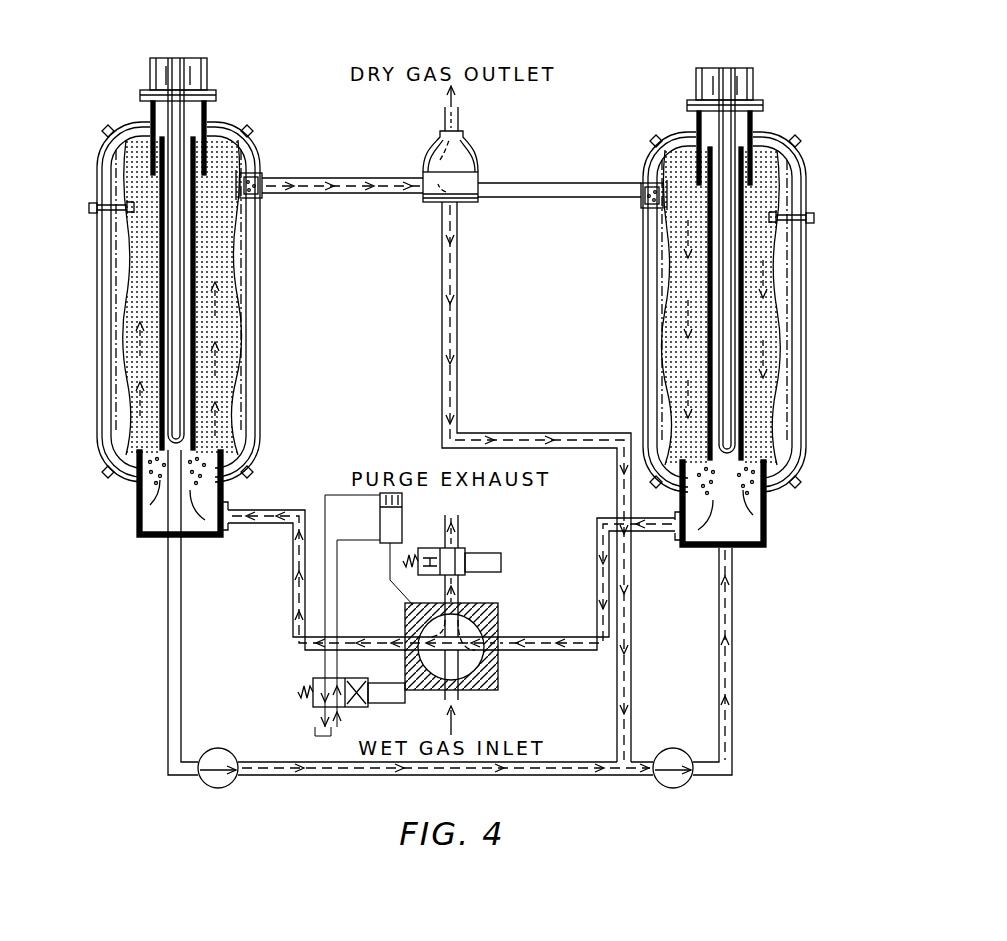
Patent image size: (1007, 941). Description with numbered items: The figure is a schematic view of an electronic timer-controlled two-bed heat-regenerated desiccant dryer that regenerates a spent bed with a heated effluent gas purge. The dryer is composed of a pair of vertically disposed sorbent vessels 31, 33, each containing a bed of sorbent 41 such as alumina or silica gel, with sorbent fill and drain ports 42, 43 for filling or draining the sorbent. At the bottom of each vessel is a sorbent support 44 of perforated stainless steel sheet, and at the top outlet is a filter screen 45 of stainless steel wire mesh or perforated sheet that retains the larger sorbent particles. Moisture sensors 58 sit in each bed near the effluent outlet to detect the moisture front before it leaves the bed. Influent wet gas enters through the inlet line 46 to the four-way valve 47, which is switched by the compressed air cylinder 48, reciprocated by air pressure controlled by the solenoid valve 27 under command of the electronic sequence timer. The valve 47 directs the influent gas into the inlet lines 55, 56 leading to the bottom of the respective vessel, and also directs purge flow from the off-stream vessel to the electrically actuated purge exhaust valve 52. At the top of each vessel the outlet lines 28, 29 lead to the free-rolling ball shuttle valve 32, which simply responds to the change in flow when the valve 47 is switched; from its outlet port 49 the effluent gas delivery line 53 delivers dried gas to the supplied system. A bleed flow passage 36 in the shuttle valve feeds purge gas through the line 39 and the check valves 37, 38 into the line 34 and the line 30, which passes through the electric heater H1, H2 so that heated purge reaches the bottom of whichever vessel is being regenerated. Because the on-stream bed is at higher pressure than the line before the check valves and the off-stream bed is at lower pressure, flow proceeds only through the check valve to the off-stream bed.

The solenoid valve 27 is at (318, 677).
The outlet line 28 is at (355, 178).
The outlet line 29 is at (572, 183).
The line 30 is at (125, 303).
The sorbent vessel 31 is at (97, 371).
The shuttle valve 32 is at (484, 160).
The sorbent vessel 33 is at (806, 378).
The line 34 is at (168, 688).
The bleed flow passage 36 is at (423, 200).
The check valve 37 is at (217, 789).
The check valve 38 is at (673, 789).
The line 39 is at (458, 377).
The bed of sorbent 41 is at (223, 307).
The sorbent fill and drain port 42 is at (103, 129).
The sorbent fill and drain port 43 is at (104, 480).
The sorbent support 44 is at (135, 452).
The filter screen 45 is at (240, 170).
The inlet line 46 is at (460, 698).
The four-way valve 47 is at (500, 665).
The compressed air cylinder 48 is at (402, 522).
The outlet port 49 is at (463, 140).
The purge exhaust valve 52 is at (472, 545).
The effluent gas delivery line 53 is at (445, 117).
The inlet line 55 is at (293, 592).
The inlet line 56 is at (597, 592).
The moisture sensor 58 is at (127, 215).
The electric heater H1 is at (172, 117).
The electric heater H2 is at (752, 125).